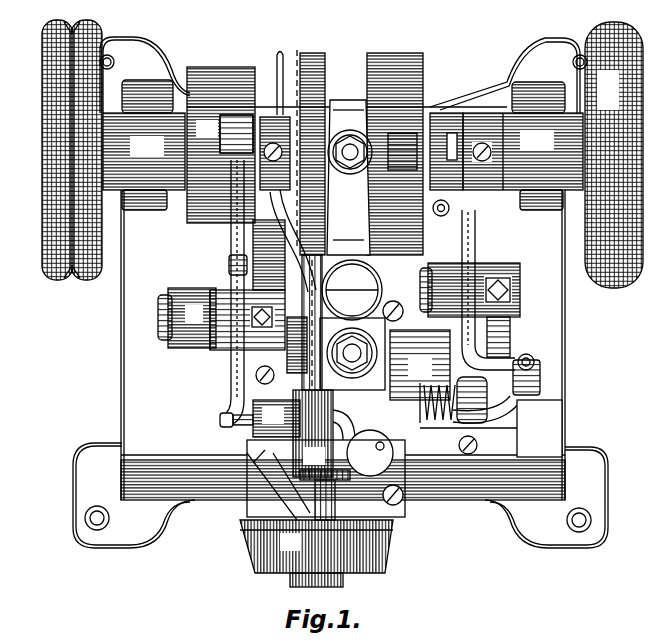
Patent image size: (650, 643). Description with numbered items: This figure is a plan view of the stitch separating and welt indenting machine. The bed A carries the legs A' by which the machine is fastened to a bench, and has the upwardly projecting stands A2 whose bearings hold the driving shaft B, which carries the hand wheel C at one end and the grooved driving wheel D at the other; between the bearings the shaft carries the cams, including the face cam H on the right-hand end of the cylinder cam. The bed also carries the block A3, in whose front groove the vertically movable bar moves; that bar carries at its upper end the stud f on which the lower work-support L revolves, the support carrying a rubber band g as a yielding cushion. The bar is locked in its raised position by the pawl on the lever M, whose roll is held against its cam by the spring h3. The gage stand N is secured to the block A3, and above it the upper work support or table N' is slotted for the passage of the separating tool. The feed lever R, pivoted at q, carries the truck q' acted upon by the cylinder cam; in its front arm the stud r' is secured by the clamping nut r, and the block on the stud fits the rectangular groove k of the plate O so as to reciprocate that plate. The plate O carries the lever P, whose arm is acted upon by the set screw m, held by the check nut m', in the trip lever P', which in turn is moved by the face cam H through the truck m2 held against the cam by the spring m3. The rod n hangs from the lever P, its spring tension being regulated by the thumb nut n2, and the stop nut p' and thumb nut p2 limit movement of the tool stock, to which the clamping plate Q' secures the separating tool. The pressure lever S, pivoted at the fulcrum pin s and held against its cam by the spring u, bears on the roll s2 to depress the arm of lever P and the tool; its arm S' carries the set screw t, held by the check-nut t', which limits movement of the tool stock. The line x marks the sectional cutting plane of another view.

The grooved driving wheel D is at (60, 150).
The hand wheel C is at (614, 155).
The legs A' is at (340, 292).
The bed A is at (352, 345).
The upwardly projecting stands A2 is at (343, 145).
The upwardly projecting arm S' is at (221, 145).
The driving shaft B is at (470, 84).
The spring h3 is at (278, 75).
The cutting plane line x is at (307, 319).
The face cam H is at (361, 145).
The feed lever R is at (348, 177).
The truck q' is at (350, 125).
The truck or roll m2 is at (400, 136).
The spring m3 is at (454, 209).
The pressure lever S is at (220, 293).
The spring u is at (224, 265).
The lever M is at (255, 285).
The fulcrum pin s is at (187, 318).
The roll s2 is at (281, 355).
The pivot q is at (352, 290).
The rod n is at (367, 320).
The clamping nut r is at (352, 353).
The stud r' is at (337, 377).
The trip lever P' is at (490, 295).
The lever P is at (420, 365).
The plate O is at (470, 394).
The set screw m is at (530, 371).
The check nut m' is at (550, 391).
The rectangular groove k is at (491, 428).
The set screw t is at (229, 421).
The check-nut t' is at (241, 436).
The stop nut p' is at (295, 455).
The thumb nut p2 is at (250, 468).
The thumb nut n2 is at (371, 453).
The gage stand N is at (327, 478).
The upper work support or table N' is at (278, 485).
The upwardly projecting block A3 is at (278, 505).
The clamping plate Q' is at (399, 525).
The rubber band g is at (316, 546).
The lower work-support L is at (300, 581).
The stud f is at (298, 586).